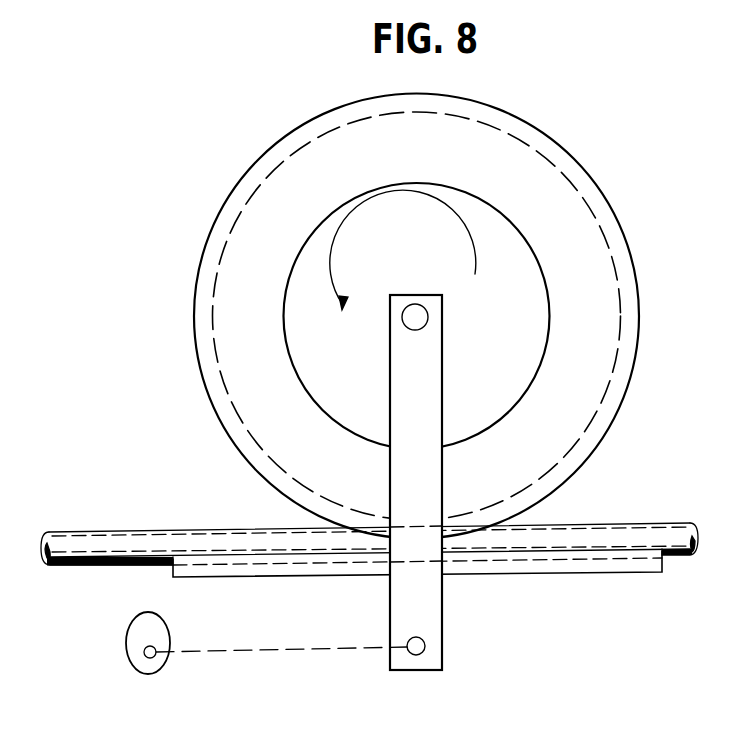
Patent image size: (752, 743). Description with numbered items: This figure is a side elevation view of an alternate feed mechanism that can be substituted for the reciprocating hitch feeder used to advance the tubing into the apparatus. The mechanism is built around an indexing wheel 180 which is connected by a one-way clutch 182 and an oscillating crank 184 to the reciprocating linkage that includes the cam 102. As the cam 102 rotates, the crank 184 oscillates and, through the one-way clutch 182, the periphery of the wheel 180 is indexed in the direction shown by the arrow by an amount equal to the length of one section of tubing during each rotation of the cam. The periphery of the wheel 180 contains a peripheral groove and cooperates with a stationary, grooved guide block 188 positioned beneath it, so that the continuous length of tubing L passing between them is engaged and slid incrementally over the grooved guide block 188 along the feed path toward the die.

The indexing wheel 180 is at (532, 128).
The one-way clutch 182 is at (326, 234).
The oscillating crank 184 is at (427, 627).
The grooved guide block 188 is at (603, 566).
The cam 102 is at (158, 633).
The continuous length of tubing L is at (127, 543).